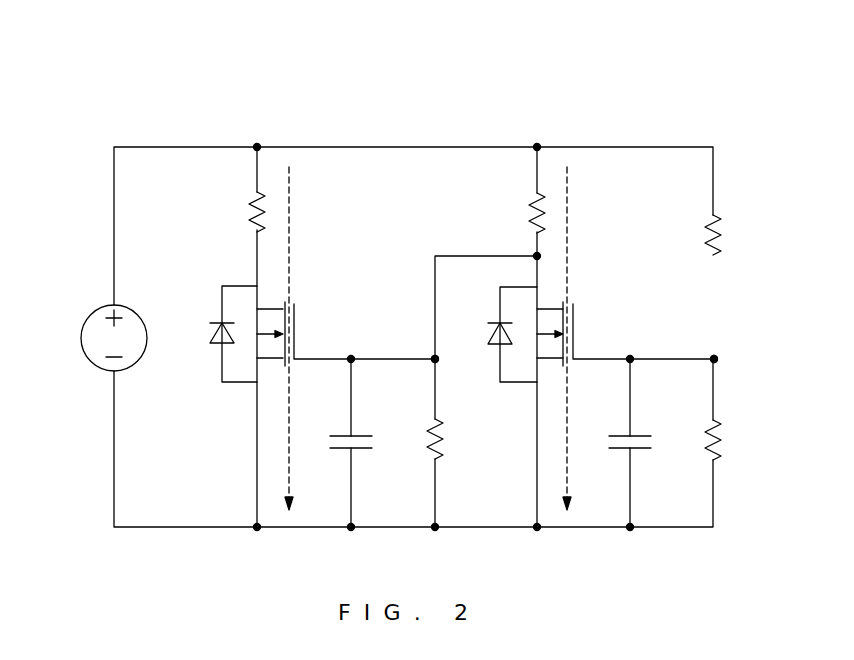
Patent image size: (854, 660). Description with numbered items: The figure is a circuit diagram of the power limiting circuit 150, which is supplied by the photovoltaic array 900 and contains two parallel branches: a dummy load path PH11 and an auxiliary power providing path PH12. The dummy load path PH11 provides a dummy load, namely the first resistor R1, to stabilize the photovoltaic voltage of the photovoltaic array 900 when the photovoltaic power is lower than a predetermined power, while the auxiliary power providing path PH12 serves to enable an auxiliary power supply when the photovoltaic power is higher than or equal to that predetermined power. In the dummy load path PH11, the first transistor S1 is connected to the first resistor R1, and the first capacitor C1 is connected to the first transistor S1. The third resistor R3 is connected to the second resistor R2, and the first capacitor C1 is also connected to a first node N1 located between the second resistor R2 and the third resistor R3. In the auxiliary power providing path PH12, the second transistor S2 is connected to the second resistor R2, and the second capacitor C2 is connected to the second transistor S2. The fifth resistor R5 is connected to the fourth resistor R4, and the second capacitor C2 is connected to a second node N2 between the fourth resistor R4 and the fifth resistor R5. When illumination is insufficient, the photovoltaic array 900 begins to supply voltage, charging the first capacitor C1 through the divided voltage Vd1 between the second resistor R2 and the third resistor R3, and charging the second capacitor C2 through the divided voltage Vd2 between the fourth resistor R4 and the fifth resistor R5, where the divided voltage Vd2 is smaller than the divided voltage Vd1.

The power limiting circuit 150 is at (770, 46).
The photovoltaic array 900 is at (95, 313).
The dummy load path PH11 is at (290, 197).
The auxiliary power providing path PH12 is at (568, 197).
The first resistor R1 is at (241, 212).
The second resistor R2 is at (518, 213).
The third resistor R3 is at (453, 443).
The fourth resistor R4 is at (731, 235).
The fifth resistor R5 is at (731, 409).
The first transistor S1 is at (280, 334).
The second transistor S2 is at (559, 334).
The first capacitor C1 is at (368, 443).
The second capacitor C2 is at (647, 443).
The first node N1 is at (451, 359).
The second node N2 is at (730, 358).
The divided voltage Vd1 is at (393, 344).
The divided voltage Vd2 is at (672, 343).